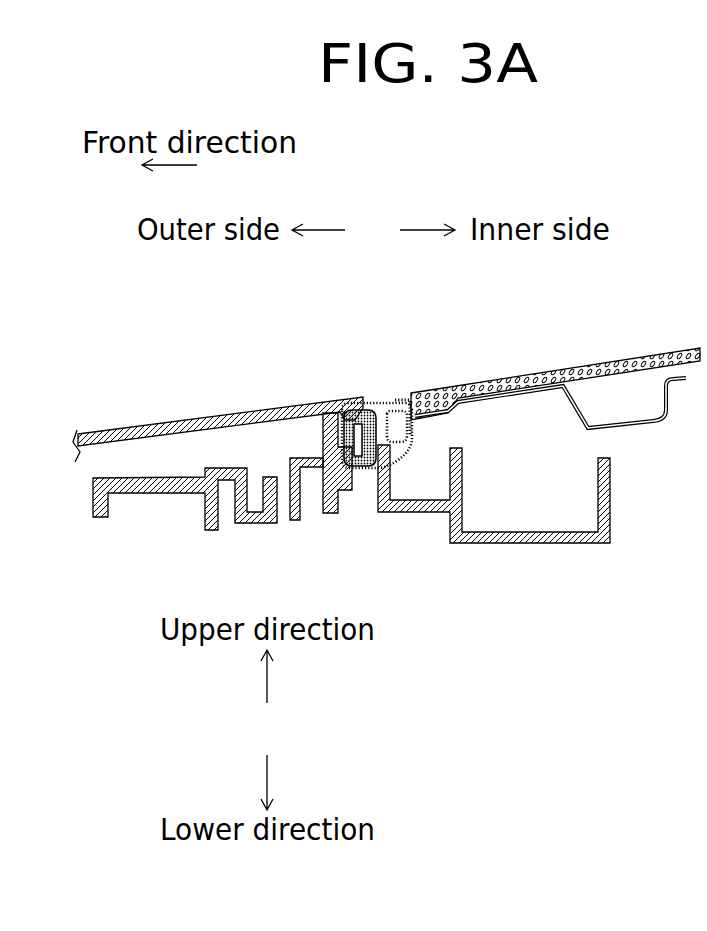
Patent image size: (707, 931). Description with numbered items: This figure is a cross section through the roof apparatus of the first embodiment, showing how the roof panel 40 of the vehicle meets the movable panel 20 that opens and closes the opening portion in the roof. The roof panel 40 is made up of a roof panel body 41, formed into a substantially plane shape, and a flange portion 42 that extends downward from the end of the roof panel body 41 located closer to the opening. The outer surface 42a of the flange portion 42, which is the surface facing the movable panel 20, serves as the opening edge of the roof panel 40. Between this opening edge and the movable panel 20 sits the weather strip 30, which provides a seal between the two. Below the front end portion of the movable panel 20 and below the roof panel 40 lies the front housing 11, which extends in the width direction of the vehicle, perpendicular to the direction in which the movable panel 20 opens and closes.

The front housing 11 is at (421, 515).
The movable panel 20 is at (497, 382).
The weather strip 30 is at (368, 360).
The roof panel 40 is at (176, 393).
The roof panel body 41 is at (213, 418).
The flange portion 42 is at (323, 421).
The outer surface of the flange portion 42a is at (391, 467).